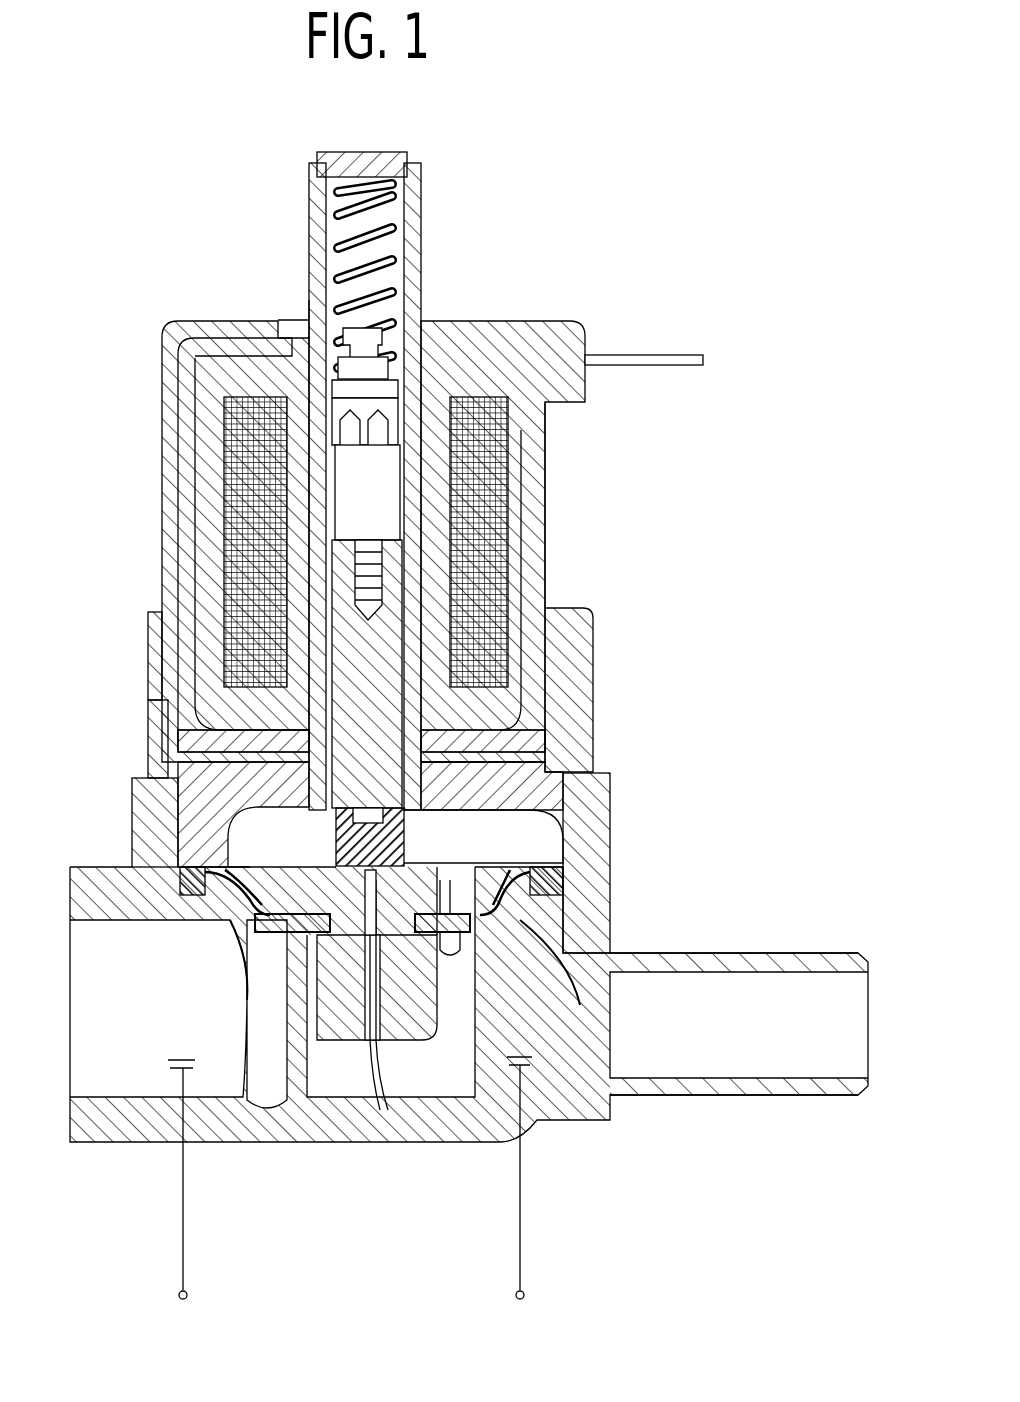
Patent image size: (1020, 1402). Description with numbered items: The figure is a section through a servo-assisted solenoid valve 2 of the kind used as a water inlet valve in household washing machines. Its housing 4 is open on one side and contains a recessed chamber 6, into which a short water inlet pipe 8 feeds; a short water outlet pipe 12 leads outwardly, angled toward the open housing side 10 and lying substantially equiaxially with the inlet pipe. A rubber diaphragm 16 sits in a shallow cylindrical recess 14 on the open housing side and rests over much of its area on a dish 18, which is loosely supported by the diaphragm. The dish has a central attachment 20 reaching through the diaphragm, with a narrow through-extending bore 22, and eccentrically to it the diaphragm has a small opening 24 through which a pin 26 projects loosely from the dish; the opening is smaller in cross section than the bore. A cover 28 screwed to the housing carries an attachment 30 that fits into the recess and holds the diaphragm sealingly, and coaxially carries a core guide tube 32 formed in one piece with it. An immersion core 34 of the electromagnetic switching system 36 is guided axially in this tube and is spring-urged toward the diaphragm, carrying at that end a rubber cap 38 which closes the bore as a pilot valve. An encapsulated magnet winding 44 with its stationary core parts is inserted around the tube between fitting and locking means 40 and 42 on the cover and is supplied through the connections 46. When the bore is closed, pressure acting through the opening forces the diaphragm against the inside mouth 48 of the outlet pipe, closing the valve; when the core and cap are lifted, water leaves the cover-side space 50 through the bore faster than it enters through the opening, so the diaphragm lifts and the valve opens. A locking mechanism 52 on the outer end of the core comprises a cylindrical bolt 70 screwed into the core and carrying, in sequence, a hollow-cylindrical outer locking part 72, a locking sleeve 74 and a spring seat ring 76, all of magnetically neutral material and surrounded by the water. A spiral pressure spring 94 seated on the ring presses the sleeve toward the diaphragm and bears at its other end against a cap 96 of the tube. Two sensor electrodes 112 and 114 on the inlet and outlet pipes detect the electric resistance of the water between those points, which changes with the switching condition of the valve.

The solenoid valve 2 is at (672, 632).
The housing 4 is at (450, 1122).
The chamber 6 is at (258, 1003).
The short water inlet pipe 8 is at (106, 1122).
The open housing side 10 is at (550, 775).
The short water outlet pipe 12 is at (757, 1082).
The shallow cylindrical recess 14 is at (590, 820).
The diaphragm 16 is at (520, 892).
The dish 18 is at (455, 893).
The central attachment 20 is at (340, 1110).
The through-extending bore 22 is at (378, 1110).
The opening 24 is at (520, 920).
The pin 26 is at (470, 960).
The cover 28 is at (500, 775).
The attachment 30 is at (178, 822).
The core guide tube 32 is at (428, 510).
The immersion core 34 is at (385, 632).
The electromagnetic switching system 36 is at (128, 662).
The rubber cap 38 is at (336, 840).
The fitting and locking means 40 is at (158, 625).
The fitting and locking means 42 is at (160, 716).
The magnet winding 44 is at (235, 466).
The connections 46 is at (645, 355).
The inside mouth 48 is at (262, 946).
The space 50 is at (232, 817).
The locking mechanism 52 is at (298, 296).
The cylindrical bolt 70 is at (385, 345).
The outer locking part 72 is at (390, 468).
The locking sleeve 74 is at (450, 428).
The spring seat ring 76 is at (400, 362).
The spiral pressure spring 94 is at (396, 226).
The cap 96 is at (376, 160).
The sensor electrode 112 is at (183, 1248).
The sensor electrode 114 is at (522, 1248).